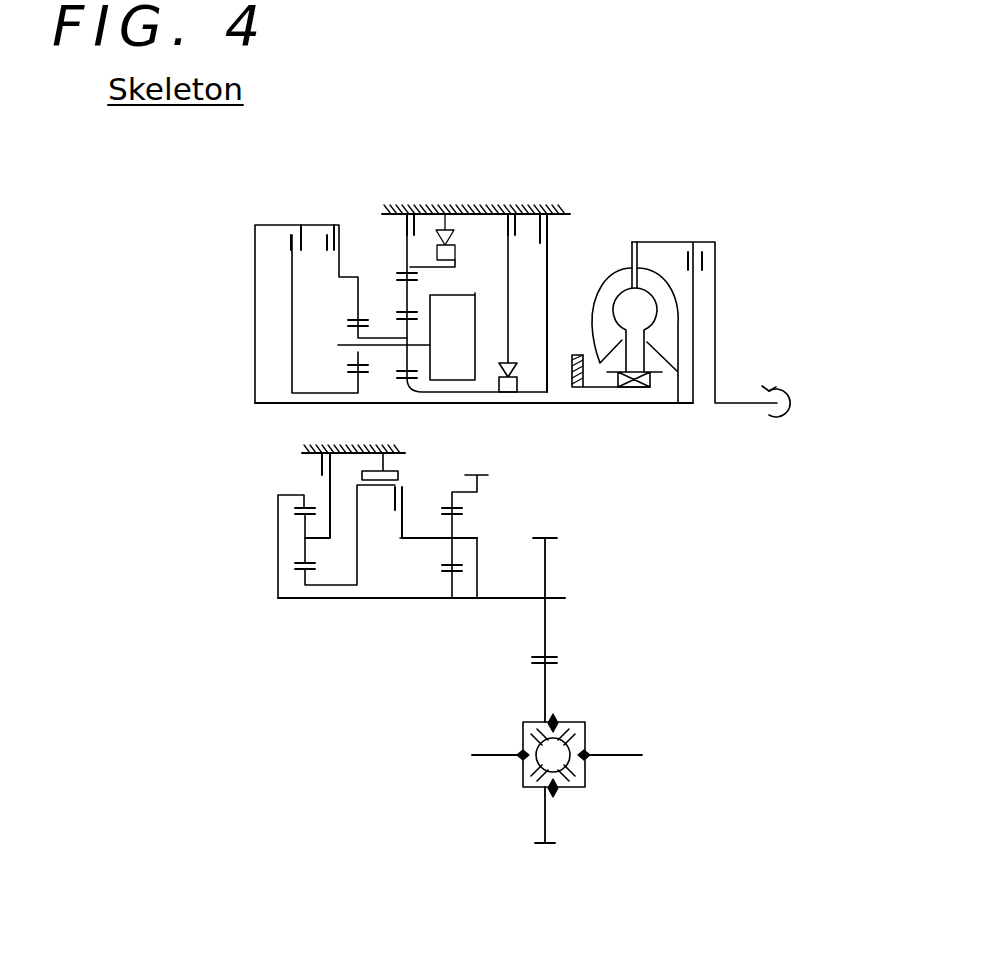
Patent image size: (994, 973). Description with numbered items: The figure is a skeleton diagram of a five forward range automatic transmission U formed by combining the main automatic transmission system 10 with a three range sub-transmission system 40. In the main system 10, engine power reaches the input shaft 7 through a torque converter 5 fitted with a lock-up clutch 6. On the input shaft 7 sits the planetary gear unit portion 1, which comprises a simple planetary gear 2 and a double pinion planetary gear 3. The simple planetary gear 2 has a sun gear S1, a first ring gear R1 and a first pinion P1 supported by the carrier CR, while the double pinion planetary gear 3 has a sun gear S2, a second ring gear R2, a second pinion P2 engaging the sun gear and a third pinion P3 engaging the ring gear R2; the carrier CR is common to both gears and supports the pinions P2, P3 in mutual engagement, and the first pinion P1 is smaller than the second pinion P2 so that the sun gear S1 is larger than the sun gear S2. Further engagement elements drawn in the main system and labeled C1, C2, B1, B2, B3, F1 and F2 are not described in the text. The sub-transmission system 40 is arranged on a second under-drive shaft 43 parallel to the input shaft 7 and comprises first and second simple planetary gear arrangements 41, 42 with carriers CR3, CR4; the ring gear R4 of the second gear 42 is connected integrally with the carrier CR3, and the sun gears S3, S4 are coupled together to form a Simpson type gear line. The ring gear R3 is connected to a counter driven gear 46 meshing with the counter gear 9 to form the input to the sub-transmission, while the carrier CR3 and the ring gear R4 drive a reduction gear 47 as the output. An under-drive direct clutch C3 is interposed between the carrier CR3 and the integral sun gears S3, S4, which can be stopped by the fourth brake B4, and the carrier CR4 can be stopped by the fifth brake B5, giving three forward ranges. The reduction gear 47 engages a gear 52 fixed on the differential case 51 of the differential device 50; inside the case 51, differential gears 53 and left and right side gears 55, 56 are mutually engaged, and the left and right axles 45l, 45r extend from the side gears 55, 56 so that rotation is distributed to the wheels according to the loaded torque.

The five forward gear range automatic transmission U is at (242, 174).
The main automatic transmission system 10 is at (586, 149).
The planetary gear unit portion 1 is at (390, 156).
The simple planetary gear 2 is at (354, 262).
The double pinion planetary gear 3 is at (393, 260).
The torque converter 5 is at (600, 287).
The lock-up clutch 6 is at (694, 241).
The input shaft 7 is at (640, 405).
The counter gear 9 is at (476, 293).
The sub-transmission system 40 is at (242, 483).
The first simple planetary gear arrangement 41 is at (472, 514).
The second simple planetary gear arrangement 42 is at (290, 493).
The second shaft (under-drive shaft) 43 is at (503, 600).
The counter driven gear 46 is at (487, 483).
The reduction gear 47 is at (546, 573).
The differential device 50 is at (592, 718).
The differential case 51 is at (577, 788).
The gear 52 is at (547, 683).
The differential gears 53 is at (540, 788).
The left side gear 55 is at (520, 747).
The right side gear 56 is at (587, 742).
The left axle 45l is at (487, 756).
The right axle 45r is at (633, 756).
The first clutch C1 is at (330, 222).
The second clutch C2 is at (292, 222).
The under-drive direct clutch C3 is at (436, 501).
The first brake B1 is at (543, 284).
The second brake B2 is at (506, 206).
The third brake B3 is at (405, 206).
The fourth brake B4 is at (380, 446).
The fifth brake B5 is at (323, 475).
The first one-way clutch F1 is at (510, 336).
The second one-way clutch F2 is at (440, 219).
The first ring gear R1 is at (357, 316).
The second ring gear R2 is at (455, 268).
The ring gear R3 is at (447, 505).
The ring gear R4 is at (292, 506).
The sun gear S1 is at (350, 383).
The sun gear S2 is at (422, 393).
The sun gear S3 is at (445, 598).
The sun gear S4 is at (300, 572).
The first pinion P1 is at (350, 333).
The second pinion P2 is at (389, 281).
The third pinion P3 is at (419, 282).
The carrier CR is at (437, 328).
The carrier CR3 is at (472, 538).
The carrier CR4 is at (300, 534).